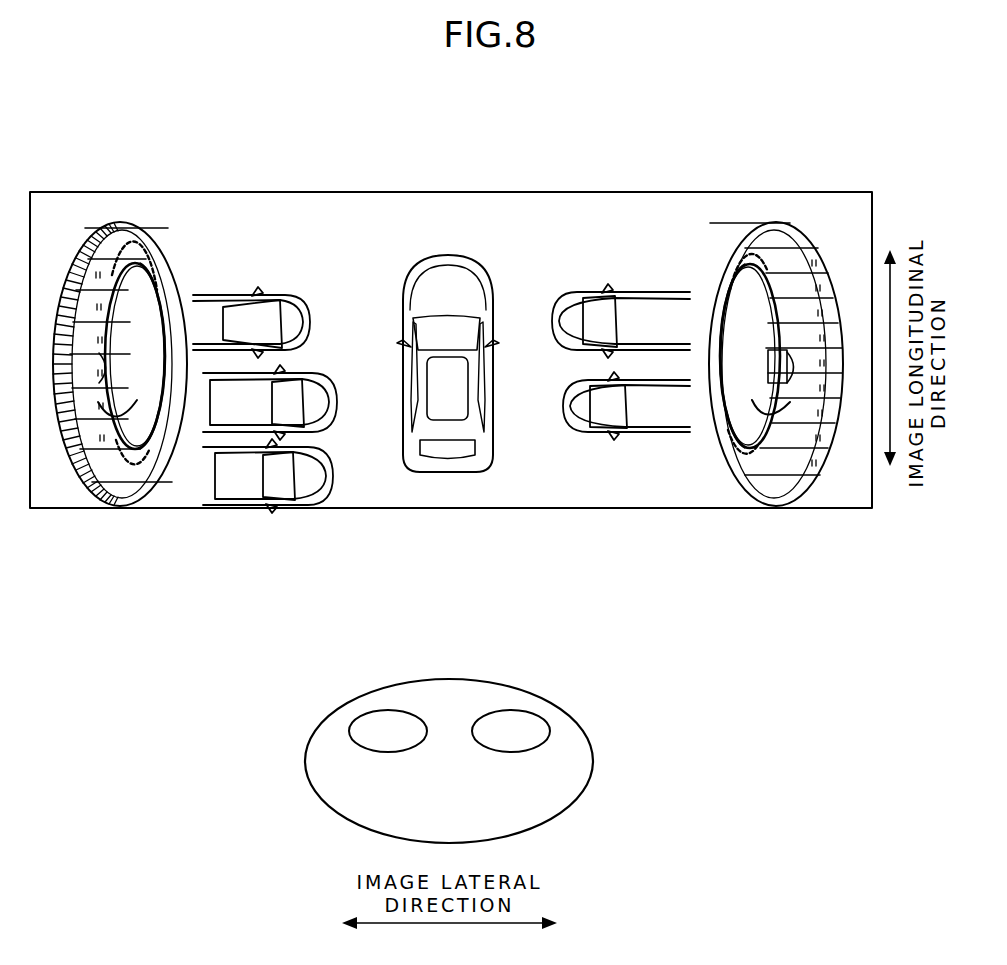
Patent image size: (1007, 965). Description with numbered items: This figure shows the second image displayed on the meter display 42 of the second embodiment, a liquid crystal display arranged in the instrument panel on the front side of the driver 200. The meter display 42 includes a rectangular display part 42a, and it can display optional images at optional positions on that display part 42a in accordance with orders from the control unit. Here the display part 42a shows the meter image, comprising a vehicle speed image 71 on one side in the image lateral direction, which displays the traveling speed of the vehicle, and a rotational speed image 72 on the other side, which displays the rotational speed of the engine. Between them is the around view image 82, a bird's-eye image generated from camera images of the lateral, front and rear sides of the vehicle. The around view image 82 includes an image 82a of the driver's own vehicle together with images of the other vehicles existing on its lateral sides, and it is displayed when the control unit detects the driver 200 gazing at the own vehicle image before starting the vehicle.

The meter display 42 is at (543, 185).
The display part 42a is at (447, 215).
The vehicle speed image 71 is at (150, 215).
The rotational speed image 72 is at (750, 212).
The around view image 82 is at (394, 528).
The image of the vehicle 82a is at (446, 475).
The driver 200 is at (596, 756).